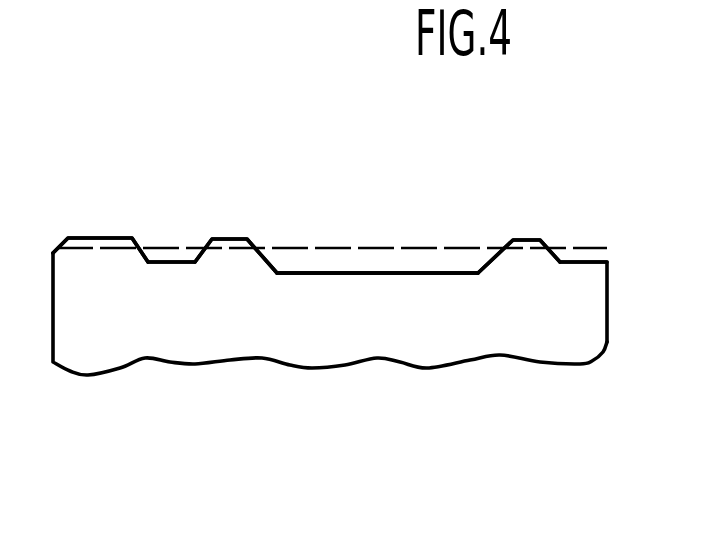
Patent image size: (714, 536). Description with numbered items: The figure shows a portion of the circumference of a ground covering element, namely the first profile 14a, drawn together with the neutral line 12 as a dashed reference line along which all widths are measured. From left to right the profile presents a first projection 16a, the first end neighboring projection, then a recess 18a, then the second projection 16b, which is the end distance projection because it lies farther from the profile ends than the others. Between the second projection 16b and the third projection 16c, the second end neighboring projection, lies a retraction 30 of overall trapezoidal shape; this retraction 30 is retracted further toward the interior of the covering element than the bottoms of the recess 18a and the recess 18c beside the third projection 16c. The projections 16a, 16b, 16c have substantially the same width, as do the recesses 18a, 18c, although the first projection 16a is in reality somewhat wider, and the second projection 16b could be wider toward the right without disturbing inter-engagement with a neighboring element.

The neutral line 12 is at (430, 247).
The first profile 14a is at (327, 258).
The first projection 16a is at (93, 240).
The second projection 16b is at (230, 240).
The third projection 16c is at (527, 242).
The recess 18a is at (175, 262).
The recess 18c is at (577, 263).
The retraction 30 is at (407, 274).